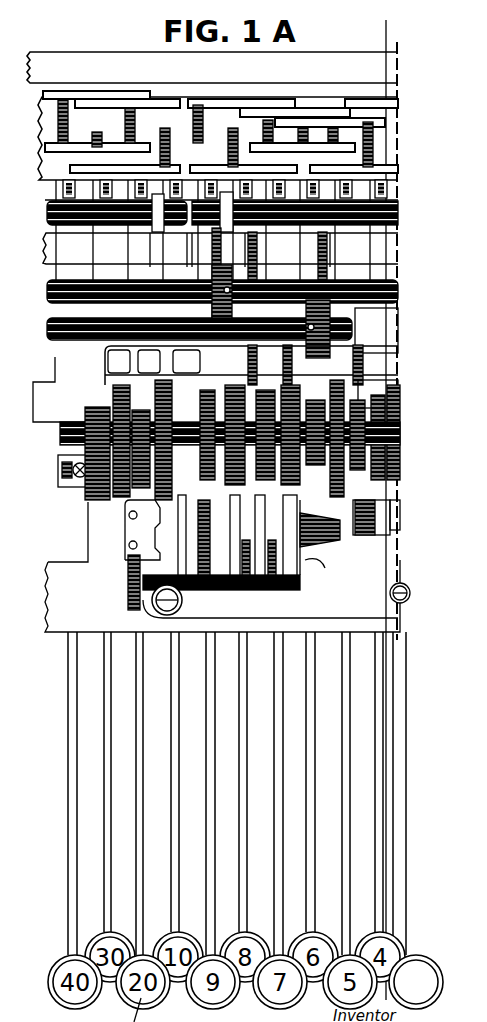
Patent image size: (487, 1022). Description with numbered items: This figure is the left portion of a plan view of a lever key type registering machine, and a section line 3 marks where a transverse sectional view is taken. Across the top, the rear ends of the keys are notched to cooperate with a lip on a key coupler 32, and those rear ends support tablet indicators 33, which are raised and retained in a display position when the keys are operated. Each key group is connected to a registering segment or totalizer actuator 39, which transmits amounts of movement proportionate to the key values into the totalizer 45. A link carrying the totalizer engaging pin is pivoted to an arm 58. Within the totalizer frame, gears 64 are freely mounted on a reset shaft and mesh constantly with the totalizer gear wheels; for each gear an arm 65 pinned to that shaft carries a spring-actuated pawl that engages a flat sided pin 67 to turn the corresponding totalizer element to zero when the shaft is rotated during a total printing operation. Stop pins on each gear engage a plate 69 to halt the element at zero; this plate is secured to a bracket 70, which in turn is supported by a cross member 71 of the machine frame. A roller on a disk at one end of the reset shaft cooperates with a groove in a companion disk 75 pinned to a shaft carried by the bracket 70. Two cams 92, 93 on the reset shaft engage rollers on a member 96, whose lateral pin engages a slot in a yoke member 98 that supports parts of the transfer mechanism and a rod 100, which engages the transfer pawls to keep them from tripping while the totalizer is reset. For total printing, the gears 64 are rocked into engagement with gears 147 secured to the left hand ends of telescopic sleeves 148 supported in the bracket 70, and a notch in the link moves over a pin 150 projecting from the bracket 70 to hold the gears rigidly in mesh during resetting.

The section line 3- 3 is at (386, 30).
The tablet indicators 33 is at (228, 150).
The registering segment or totalizer actuator 39 is at (212, 360).
The arm 58 is at (355, 351).
The gears 64 is at (128, 388).
The arm 65 is at (163, 386).
The companion disk 75 is at (395, 406).
The key coupler 32 is at (46, 391).
The cam 93 is at (112, 397).
The flat sided pin 67 is at (260, 438).
The member 96 is at (96, 498).
The cam 92 is at (110, 518).
The totalizer 45 is at (106, 536).
The plate 69 is at (127, 548).
The yoke member 98 is at (143, 603).
The cross member 71 is at (60, 625).
The rod 100 is at (260, 586).
The gears 147 is at (305, 568).
The telescopic sleeves 148 is at (325, 545).
The pin 150 is at (371, 532).
The bracket 70 is at (332, 607).